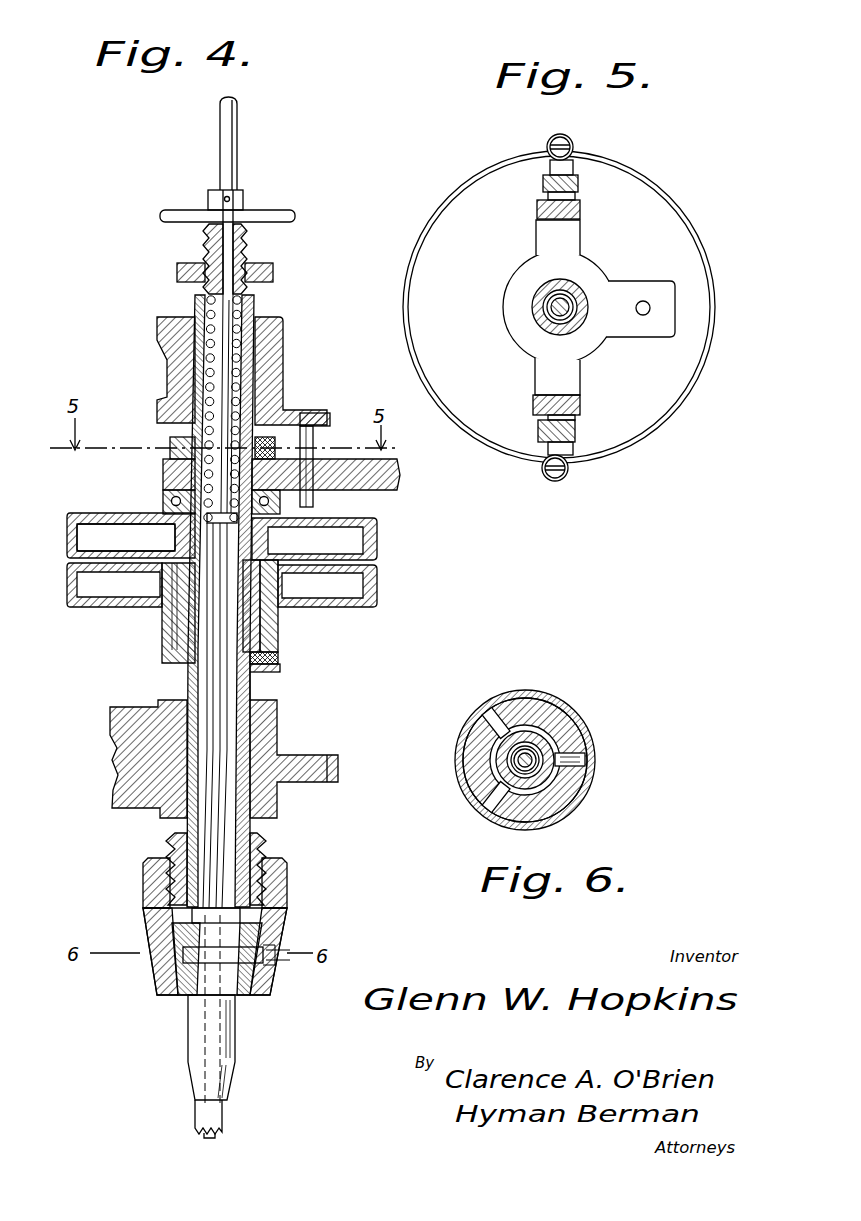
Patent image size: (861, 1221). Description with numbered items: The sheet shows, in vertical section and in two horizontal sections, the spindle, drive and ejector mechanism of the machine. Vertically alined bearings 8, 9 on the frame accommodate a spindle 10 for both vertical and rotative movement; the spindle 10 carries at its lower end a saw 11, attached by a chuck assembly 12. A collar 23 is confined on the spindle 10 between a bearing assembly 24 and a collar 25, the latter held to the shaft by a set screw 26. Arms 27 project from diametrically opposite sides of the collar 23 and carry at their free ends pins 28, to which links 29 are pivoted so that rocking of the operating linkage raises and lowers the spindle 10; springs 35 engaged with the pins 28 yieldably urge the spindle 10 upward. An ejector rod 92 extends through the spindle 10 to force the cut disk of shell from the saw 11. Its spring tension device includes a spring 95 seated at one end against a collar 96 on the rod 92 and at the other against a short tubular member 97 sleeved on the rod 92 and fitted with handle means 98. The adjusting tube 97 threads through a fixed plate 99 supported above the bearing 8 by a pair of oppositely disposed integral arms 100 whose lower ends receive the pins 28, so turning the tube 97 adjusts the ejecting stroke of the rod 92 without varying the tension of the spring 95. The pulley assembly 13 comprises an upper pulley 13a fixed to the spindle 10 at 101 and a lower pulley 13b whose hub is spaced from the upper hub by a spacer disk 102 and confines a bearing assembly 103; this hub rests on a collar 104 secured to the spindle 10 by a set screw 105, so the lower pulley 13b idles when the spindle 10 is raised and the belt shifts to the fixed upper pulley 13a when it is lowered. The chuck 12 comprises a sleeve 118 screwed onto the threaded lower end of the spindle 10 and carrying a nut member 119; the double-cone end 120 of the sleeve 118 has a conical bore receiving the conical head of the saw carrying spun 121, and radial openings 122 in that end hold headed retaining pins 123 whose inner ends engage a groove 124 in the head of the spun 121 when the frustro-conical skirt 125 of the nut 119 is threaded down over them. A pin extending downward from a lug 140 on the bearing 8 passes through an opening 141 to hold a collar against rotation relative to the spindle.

In FIG. 4, the bearing 8 is at (262, 360).
In FIG. 4, the bearing 9 is at (262, 730).
In FIG. 4, the spindle 10 is at (252, 690).
In FIG. 4, the saw 11 is at (222, 1114).
In FIG. 4, the chuck assembly 12 is at (292, 918).
In FIG. 4, the pulley assembly 13 is at (382, 574).
In FIG. 4, the upper pulley 13a is at (67, 535).
In FIG. 5, the upper pulley 13a is at (668, 418).
In FIG. 4, the lower pulley 13b is at (67, 600).
In FIG. 5, the collar 23 is at (512, 343).
In FIG. 4, the bearing assembly 24 is at (170, 502).
In FIG. 4, the collar 25 is at (170, 443).
In FIG. 4, the set screw 26 is at (275, 450).
In FIG. 5, the arms 27 is at (572, 236).
In FIG. 5, the pins 28 is at (570, 450).
In FIG. 5, the links 29 is at (543, 181).
In FIG. 5, the springs 35 is at (571, 140).
In FIG. 4, the ejector rod 92 is at (212, 678).
In FIG. 5, the ejector rod 92 is at (553, 301).
In FIG. 6, the ejector rod 92 is at (517, 760).
In FIG. 4, the spring 95 is at (256, 318).
In FIG. 5, the spring 95 is at (540, 308).
In FIG. 4, the collar 96 is at (175, 540).
In FIG. 4, the tubular member 97 is at (250, 245).
In FIG. 4, the handle means 98 is at (273, 212).
In FIG. 4, the fixed plate 99 is at (177, 271).
In FIG. 5, the integral arms 100 is at (580, 210).
In FIG. 4, the fixing point 101 is at (282, 542).
In FIG. 4, the spacer disk 102 is at (290, 572).
In FIG. 4, the bearing assembly 103 is at (165, 630).
In FIG. 4, the collar 104 is at (282, 668).
In FIG. 4, the set screw 105 is at (280, 660).
In FIG. 4, the sleeve 118 is at (268, 846).
In FIG. 4, the nut member 119 is at (288, 875).
In FIG. 4, the double-cone end 120 is at (162, 962).
In FIG. 6, the double-cone end 120 is at (568, 808).
In FIG. 4, the saw carrying spun 121 is at (237, 1036).
In FIG. 6, the radial openings 122 is at (575, 738).
In FIG. 6, the retaining pins 123 is at (586, 759).
In FIG. 4, the groove 124 is at (197, 967).
In FIG. 6, the groove 124 is at (523, 795).
In FIG. 4, the frustro-conical skirt 125 is at (285, 935).
In FIG. 6, the frustro-conical skirt 125 is at (592, 792).
In FIG. 4, the lug 140 is at (313, 413).
In FIG. 5, the opening 141 is at (647, 301).